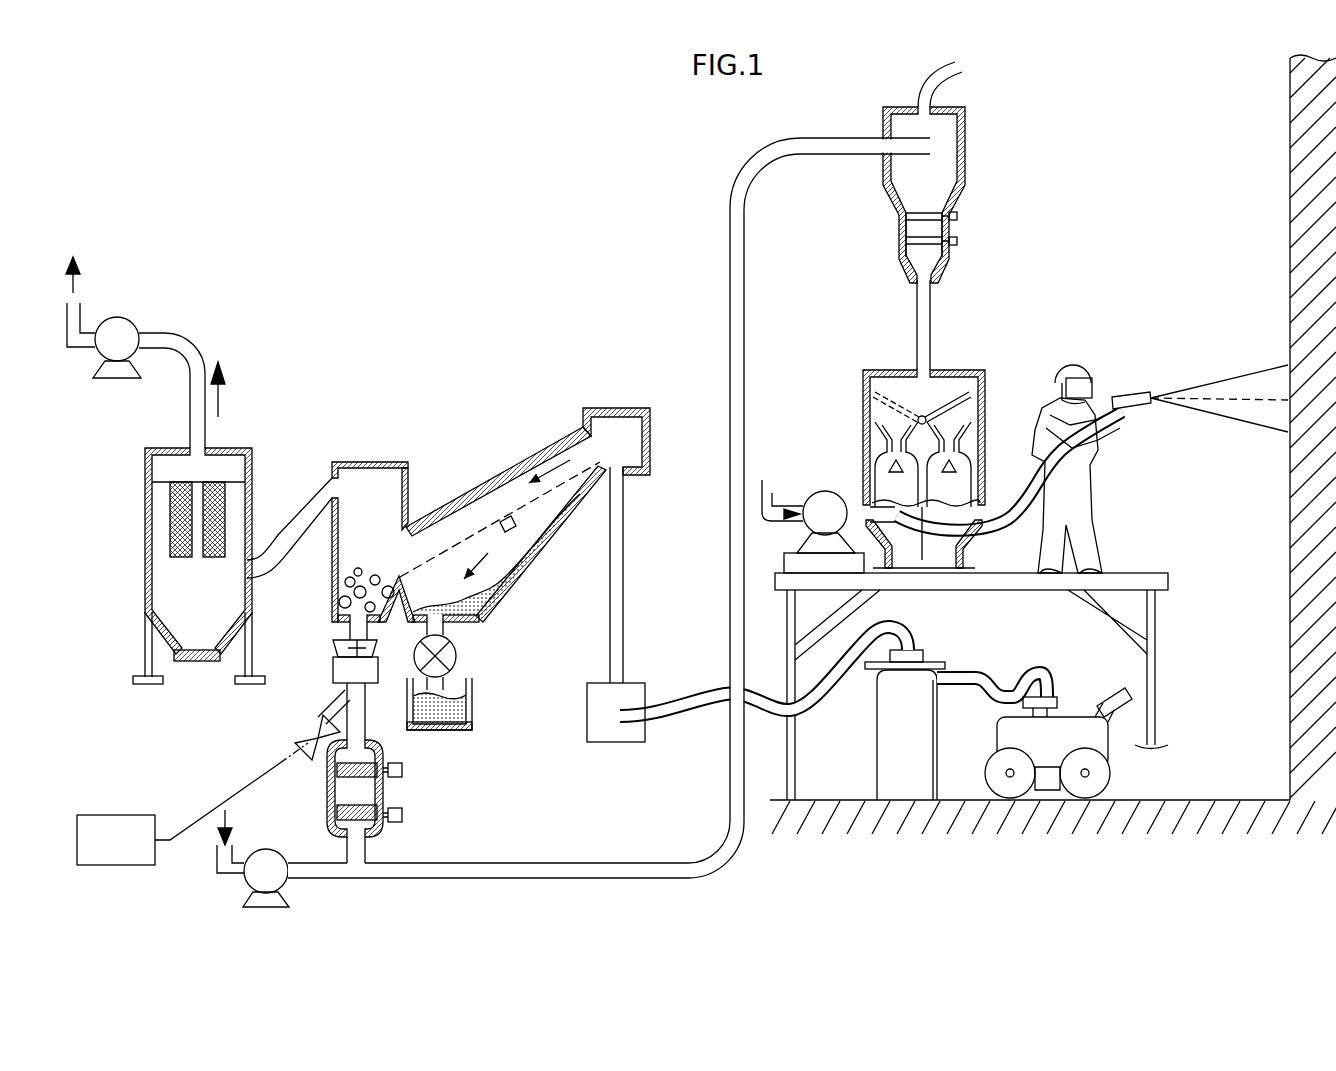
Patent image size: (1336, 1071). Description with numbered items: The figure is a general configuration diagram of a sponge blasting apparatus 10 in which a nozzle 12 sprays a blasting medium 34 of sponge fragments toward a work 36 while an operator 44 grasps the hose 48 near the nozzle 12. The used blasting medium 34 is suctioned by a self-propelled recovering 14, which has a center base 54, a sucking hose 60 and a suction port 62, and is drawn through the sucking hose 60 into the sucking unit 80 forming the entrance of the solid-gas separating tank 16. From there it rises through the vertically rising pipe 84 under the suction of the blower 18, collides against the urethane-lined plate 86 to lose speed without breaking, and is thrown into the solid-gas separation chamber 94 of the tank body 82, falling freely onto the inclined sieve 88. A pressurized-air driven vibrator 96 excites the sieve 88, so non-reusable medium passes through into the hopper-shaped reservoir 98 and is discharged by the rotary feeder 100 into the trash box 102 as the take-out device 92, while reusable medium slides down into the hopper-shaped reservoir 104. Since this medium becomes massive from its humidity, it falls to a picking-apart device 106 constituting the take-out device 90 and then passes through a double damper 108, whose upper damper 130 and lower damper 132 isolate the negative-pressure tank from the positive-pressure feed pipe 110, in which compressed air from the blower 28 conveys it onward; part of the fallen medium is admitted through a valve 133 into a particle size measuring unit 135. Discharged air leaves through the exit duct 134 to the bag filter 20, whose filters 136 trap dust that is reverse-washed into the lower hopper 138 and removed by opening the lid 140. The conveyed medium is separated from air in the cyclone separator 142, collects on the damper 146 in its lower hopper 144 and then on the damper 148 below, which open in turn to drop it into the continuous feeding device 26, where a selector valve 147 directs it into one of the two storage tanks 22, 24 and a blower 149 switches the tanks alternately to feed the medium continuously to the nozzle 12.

The sponge blasting apparatus 10 is at (569, 211).
The nozzle 12 is at (1143, 395).
The self-propelled recovering 14 is at (1078, 718).
The solid-gas separating tank 16 is at (469, 498).
The blower 18 is at (118, 332).
The bag filter 20 is at (198, 545).
The storage tank 22 is at (876, 478).
The storage tank 24 is at (970, 485).
The continuous feeding device 26 is at (911, 424).
The blower 28 is at (257, 847).
The blasting medium 34 is at (530, 578).
The work 36 is at (1292, 268).
The operator 44 is at (1090, 362).
The hose 48 is at (1012, 502).
The center base 54 is at (882, 755).
The sucking hose 60 is at (980, 675).
The suction port 62 is at (1047, 801).
The sucking unit 80 is at (647, 700).
The tank body 82 is at (483, 486).
The vertically rising pipe 84 is at (625, 592).
The plate 86 is at (650, 440).
The sieve 88 is at (425, 563).
The take-out device 90 is at (318, 667).
The take-out device 92 is at (489, 683).
The solid-gas separation chamber 94 is at (553, 442).
The vibrator 96 is at (517, 527).
The hopper-shaped reservoir 98 is at (503, 600).
The rotary feeder 100 is at (457, 655).
The trash box 102 is at (472, 708).
The hopper-shaped reservoir 104 is at (340, 622).
The picking-apart device 106 is at (382, 652).
The double damper 108 is at (403, 796).
The positive-pressure feed pipe 110 is at (542, 862).
The upper damper 130 is at (371, 801).
The lower damper 132 is at (331, 833).
The valve 133 is at (298, 735).
The exit duct 134 is at (268, 540).
The particle size measuring unit 135 is at (120, 814).
The filter 136 is at (228, 503).
The lower hopper 138 is at (150, 618).
The lid 140 is at (200, 661).
The cyclone separator 142 is at (935, 172).
The lower hopper 144 is at (900, 226).
The damper 146 is at (930, 218).
The selector valve 147 is at (913, 395).
The damper 148 is at (933, 247).
The blower 149 is at (822, 500).